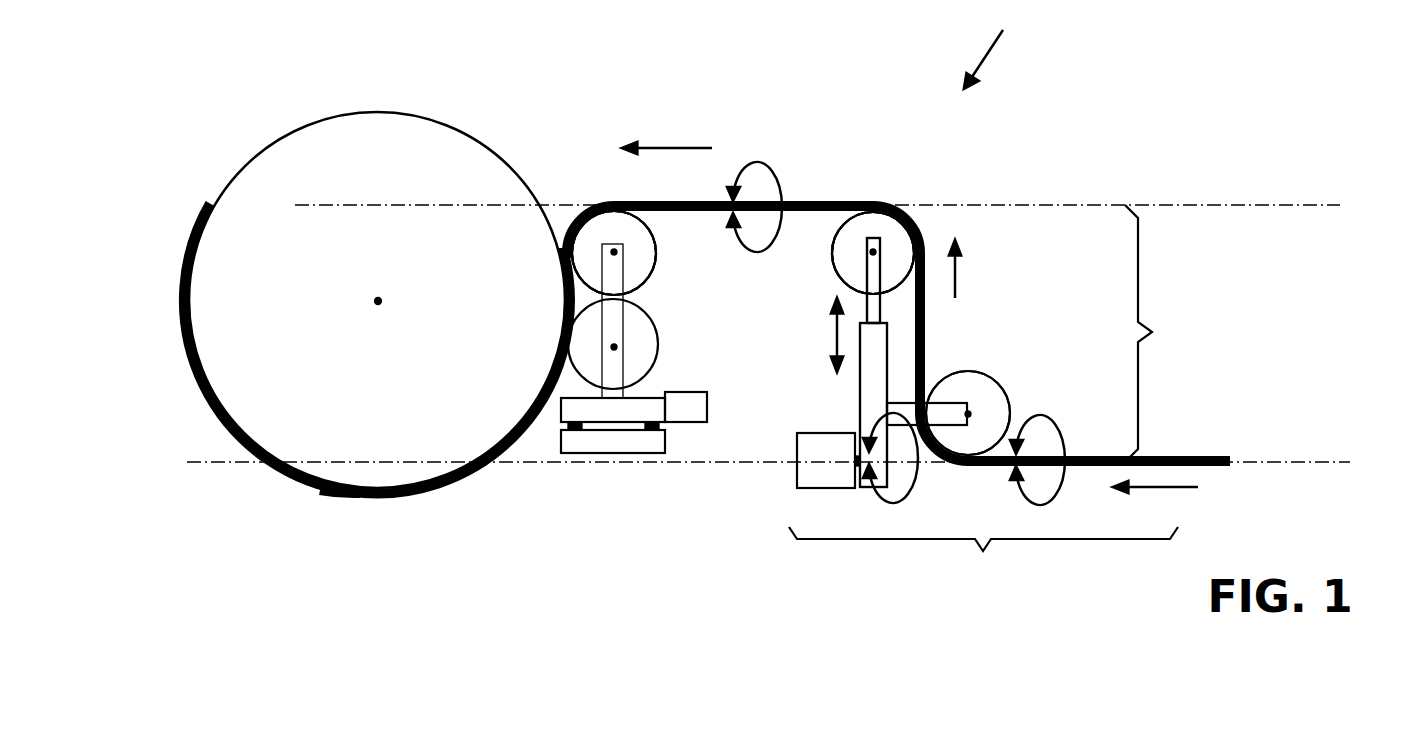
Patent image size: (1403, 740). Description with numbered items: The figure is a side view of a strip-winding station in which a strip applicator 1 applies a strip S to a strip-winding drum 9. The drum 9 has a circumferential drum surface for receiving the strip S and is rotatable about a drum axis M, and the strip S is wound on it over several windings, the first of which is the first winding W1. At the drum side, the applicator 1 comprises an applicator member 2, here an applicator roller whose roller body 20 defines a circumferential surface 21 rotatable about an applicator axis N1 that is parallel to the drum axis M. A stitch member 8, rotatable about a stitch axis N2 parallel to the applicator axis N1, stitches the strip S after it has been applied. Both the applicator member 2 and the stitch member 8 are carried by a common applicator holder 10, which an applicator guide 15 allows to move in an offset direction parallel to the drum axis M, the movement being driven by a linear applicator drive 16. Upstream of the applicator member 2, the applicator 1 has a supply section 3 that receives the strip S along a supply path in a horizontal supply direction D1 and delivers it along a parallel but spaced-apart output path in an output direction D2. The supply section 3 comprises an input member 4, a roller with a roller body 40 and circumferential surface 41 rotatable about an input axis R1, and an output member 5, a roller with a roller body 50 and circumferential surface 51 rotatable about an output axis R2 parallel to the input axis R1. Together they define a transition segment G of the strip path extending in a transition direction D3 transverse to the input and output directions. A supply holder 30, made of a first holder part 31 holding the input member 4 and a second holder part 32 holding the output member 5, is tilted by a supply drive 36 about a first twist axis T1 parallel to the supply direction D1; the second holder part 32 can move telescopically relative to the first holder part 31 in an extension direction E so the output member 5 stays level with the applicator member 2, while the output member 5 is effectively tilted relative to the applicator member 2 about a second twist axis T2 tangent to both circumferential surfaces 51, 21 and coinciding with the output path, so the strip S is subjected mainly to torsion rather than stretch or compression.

The strip applicator 1 is at (989, 45).
The applicator member 2 is at (642, 237).
The supply section 3 is at (983, 556).
The input member 4 is at (988, 385).
The output member 5 is at (843, 255).
The stitch member 8 is at (650, 333).
The strip-winding drum 9 is at (258, 160).
The applicator holder 10 is at (592, 344).
The applicator guide 15 is at (581, 432).
The applicator drive 16 is at (705, 401).
The roller body 20 is at (648, 255).
The circumferential surface 21 is at (653, 281).
The supply holder 30 is at (880, 351).
The first holder part 31 is at (862, 396).
The second holder part 32 is at (868, 276).
The supply drive 36 is at (826, 485).
The roller body 40 is at (1003, 400).
The circumferential surface 41 is at (1013, 415).
The roller body 50 is at (916, 241).
The circumferential surface 51 is at (841, 236).
The drum axis M is at (390, 286).
The strip S is at (181, 345).
The first winding W1 is at (342, 495).
The applicator axis N1 is at (612, 243).
The stitch axis N2 is at (620, 350).
The input axis R1 is at (968, 418).
The output axis R2 is at (873, 245).
The supply direction D1 is at (1154, 503).
The output direction D2 is at (666, 132).
The transition direction D3 is at (976, 268).
The extension direction E is at (823, 335).
The transition segment G is at (1150, 333).
The first twist axis T1 is at (788, 462).
The second twist axis T2 is at (838, 205).